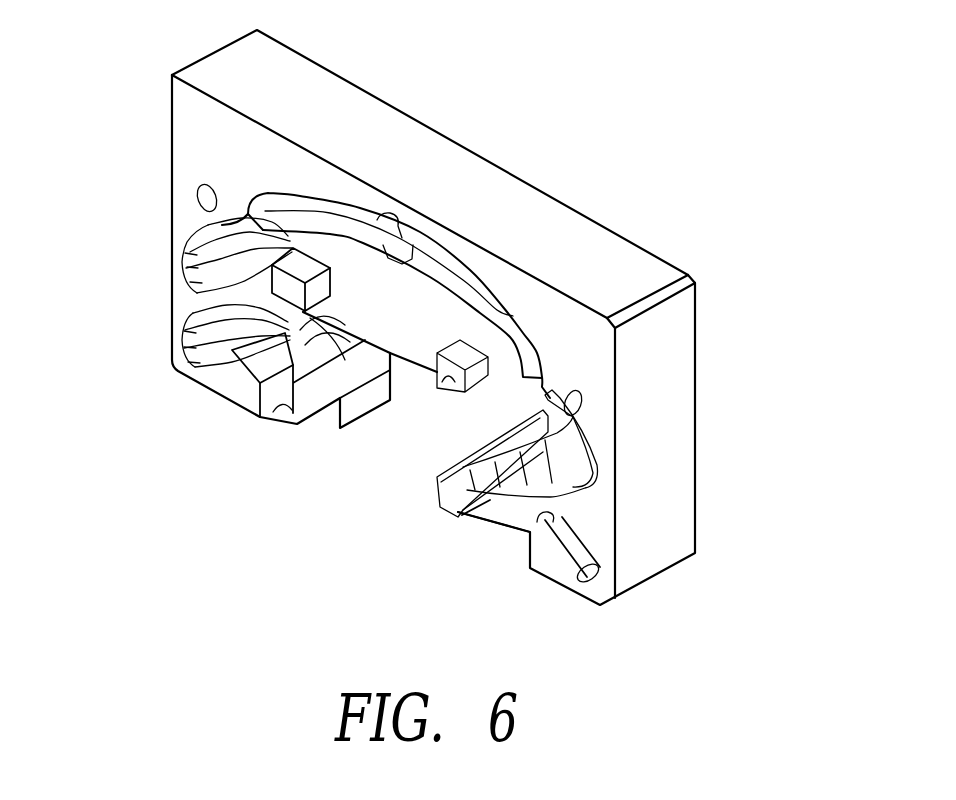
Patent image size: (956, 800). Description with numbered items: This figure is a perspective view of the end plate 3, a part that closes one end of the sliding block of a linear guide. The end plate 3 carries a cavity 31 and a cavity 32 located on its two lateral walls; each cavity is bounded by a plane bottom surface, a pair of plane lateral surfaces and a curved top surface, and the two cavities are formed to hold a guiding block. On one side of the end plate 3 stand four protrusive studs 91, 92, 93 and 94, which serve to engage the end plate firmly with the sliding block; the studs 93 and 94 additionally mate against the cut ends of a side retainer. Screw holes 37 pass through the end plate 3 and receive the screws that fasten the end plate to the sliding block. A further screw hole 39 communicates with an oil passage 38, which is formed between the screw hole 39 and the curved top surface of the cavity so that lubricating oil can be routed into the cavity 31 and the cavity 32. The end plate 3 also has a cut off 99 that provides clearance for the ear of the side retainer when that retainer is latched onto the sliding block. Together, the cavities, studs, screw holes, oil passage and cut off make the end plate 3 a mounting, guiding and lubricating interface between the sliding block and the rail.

The end plate 3 is at (647, 540).
The cavity 31 is at (580, 468).
The cavity 32 is at (172, 317).
The screw hole 37 is at (200, 197).
The oil passage 38 is at (497, 310).
The screw hole 39 is at (400, 237).
The protrusive stud 91 is at (435, 372).
The protrusive stud 92 is at (300, 262).
The protrusive stud 93 is at (442, 497).
The protrusive stud 94 is at (285, 413).
The cut off 99 is at (330, 418).